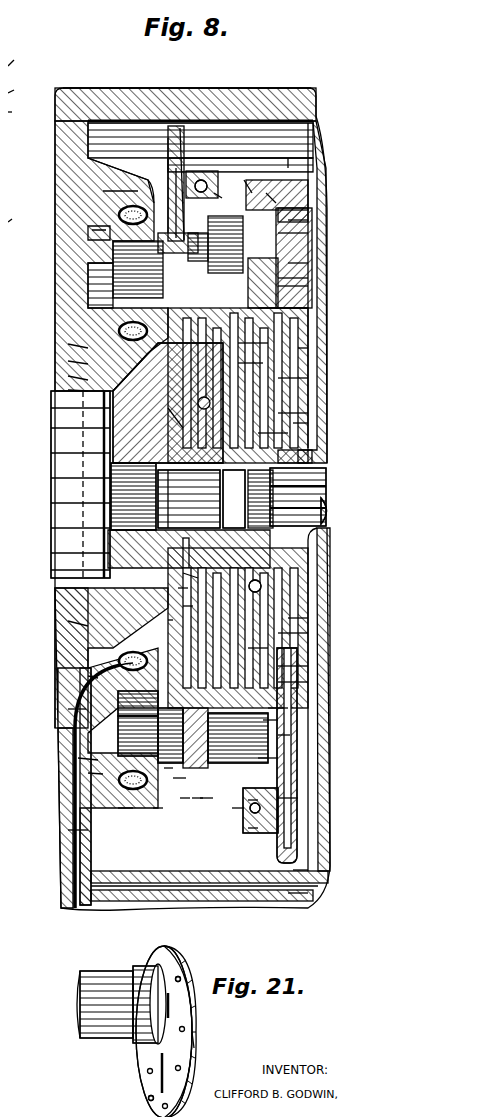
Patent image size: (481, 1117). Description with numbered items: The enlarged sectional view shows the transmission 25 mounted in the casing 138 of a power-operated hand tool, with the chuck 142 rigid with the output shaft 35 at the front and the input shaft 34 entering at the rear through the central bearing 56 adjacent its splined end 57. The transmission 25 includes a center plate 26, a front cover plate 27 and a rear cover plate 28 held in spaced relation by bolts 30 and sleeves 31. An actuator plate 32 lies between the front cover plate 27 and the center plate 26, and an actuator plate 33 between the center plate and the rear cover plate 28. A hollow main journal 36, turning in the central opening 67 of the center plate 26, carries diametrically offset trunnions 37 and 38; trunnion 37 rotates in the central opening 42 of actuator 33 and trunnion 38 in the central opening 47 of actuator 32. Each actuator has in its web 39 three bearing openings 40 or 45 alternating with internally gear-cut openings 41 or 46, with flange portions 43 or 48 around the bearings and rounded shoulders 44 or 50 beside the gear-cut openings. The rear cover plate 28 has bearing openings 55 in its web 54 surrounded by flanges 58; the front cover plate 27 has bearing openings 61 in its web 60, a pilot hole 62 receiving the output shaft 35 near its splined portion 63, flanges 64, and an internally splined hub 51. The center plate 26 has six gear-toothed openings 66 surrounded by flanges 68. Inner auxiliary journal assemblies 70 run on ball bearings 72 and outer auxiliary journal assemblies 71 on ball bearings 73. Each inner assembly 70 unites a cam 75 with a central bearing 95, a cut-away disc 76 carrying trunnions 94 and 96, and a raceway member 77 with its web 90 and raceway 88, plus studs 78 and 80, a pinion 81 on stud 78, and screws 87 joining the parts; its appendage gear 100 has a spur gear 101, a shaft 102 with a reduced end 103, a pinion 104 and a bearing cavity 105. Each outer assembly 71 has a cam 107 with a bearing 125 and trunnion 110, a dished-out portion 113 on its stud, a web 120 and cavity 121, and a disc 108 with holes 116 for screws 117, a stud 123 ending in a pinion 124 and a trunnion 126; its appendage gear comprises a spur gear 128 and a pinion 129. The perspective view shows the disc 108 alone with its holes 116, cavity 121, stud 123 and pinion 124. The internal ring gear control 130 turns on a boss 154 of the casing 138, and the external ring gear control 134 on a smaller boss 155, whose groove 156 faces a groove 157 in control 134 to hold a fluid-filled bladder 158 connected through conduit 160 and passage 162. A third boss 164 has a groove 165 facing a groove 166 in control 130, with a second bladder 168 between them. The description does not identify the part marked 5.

In FIG. 8, the transmission 5 is at (11, 53).
In FIG. 8, the transmission 25 is at (60, 613).
In FIG. 8, the center plate 26 is at (217, 230).
In FIG. 8, the front cover plate 27 is at (176, 790).
In FIG. 8, the rear cover plate 28 is at (4, 84).
In FIG. 8, the bolts or rivets 30 is at (2, 104).
In FIG. 8, the sleeves 31 is at (17, 213).
In FIG. 8, the actuator plate 32 is at (188, 790).
In FIG. 8, the actuator plate 33 is at (260, 335).
In FIG. 8, the input shaft 34 is at (300, 490).
In FIG. 8, the output shaft 35 is at (190, 570).
In FIG. 8, the main journal member 36 is at (270, 425).
In FIG. 8, the trunnion 37 is at (280, 405).
In FIG. 8, the trunnion 38 is at (180, 580).
In FIG. 8, the web portion 39 is at (255, 355).
In FIG. 8, the bearing openings 40 is at (285, 200).
In FIG. 8, the internally gear-cut openings 41 is at (292, 862).
In FIG. 8, the central opening 42 is at (304, 414).
In FIG. 8, the annular flange portion 43 is at (280, 300).
In FIG. 8, the annular shoulder 44 is at (252, 808).
In FIG. 8, the bearing openings 45 is at (198, 790).
In FIG. 8, the internally gear-cut openings 46 is at (170, 405).
In FIG. 8, the central opening 47 is at (185, 598).
In FIG. 8, the annular flange portion 48 is at (210, 190).
In FIG. 8, the annular shoulder 50 is at (175, 420).
In FIG. 8, the internally splined hub 51 is at (96, 452).
In FIG. 8, the web portion 54 is at (290, 370).
In FIG. 8, the bearing openings 55 is at (282, 225).
In FIG. 8, the central bearing opening 56 is at (300, 450).
In FIG. 8, the splined end 57 is at (322, 503).
In FIG. 8, the annular flange portions 58 is at (290, 318).
In FIG. 8, the web portion 60 is at (60, 353).
In FIG. 8, the bearing openings 61 is at (160, 130).
In FIG. 8, the pilot hole 62 is at (175, 515).
In FIG. 8, the splined portion 63 is at (120, 494).
In FIG. 8, the annular flange portions 64 is at (172, 120).
In FIG. 8, the gear-toothed openings 66 is at (275, 270).
In FIG. 8, the central opening 67 is at (234, 499).
In FIG. 8, the annular flanges 68 is at (295, 610).
In FIG. 8, the inner auxiliary journal assembly 70 is at (230, 800).
In FIG. 8, the outer auxiliary journal assembly 71 is at (240, 180).
In FIG. 8, the ball bearings 72 is at (245, 820).
In FIG. 8, the ball bearings 73 is at (193, 172).
In FIG. 8, the cam member 75 is at (150, 800).
In FIG. 8, the cut-away disc member 76 is at (290, 658).
In FIG. 8, the inner raceway member 77 is at (253, 582).
In FIG. 8, the stud 78 is at (125, 722).
In FIG. 8, the stud 80 is at (125, 690).
In FIG. 8, the pinion 81 is at (66, 716).
In FIG. 8, the screws 87 is at (290, 625).
In FIG. 8, the ball bearing raceway 88 is at (245, 792).
In FIG. 8, the web 90 is at (255, 640).
In FIG. 8, the trunnion 94 is at (270, 712).
In FIG. 8, the central cavity or bearing 95 is at (170, 735).
In FIG. 8, the trunnion 96 is at (282, 727).
In FIG. 8, the appendage gear 100 is at (280, 700).
In FIG. 8, the spur gear 101 is at (290, 790).
In FIG. 8, the shaft 102 is at (270, 750).
In FIG. 8, the reduced end portion 103 is at (170, 770).
In FIG. 8, the pinion 104 is at (290, 674).
In FIG. 8, the bearing cavity 105 is at (262, 720).
In FIG. 8, the cam member 107 is at (280, 150).
In FIG. 8, the cut-away disc member 108 is at (60, 368).
In FIG. 21, the cut-away disc member 108 is at (186, 1040).
In FIG. 8, the trunnion 110 is at (290, 278).
In FIG. 8, the dished-out portion 113 is at (290, 255).
In FIG. 21, the holes 116 is at (172, 970).
In FIG. 8, the screws 117 is at (60, 382).
In FIG. 8, the web 120 is at (300, 340).
In FIG. 21, the cavity 121 is at (162, 940).
In FIG. 8, the stud 123 is at (125, 258).
In FIG. 21, the stud 123 is at (130, 1015).
In FIG. 8, the pinion 124 is at (90, 270).
In FIG. 21, the pinion 124 is at (90, 1018).
In FIG. 8, the central cavity or bearing 125 is at (290, 212).
In FIG. 8, the trunnion 126 is at (82, 224).
In FIG. 8, the spur gear 128 is at (168, 160).
In FIG. 8, the pinion 129 is at (262, 190).
In FIG. 8, the control with internal ring gear 130 is at (85, 765).
In FIG. 8, the control member with external ring gear 134 is at (75, 701).
In FIG. 8, the casing 138 is at (290, 80).
In FIG. 8, the chuck 142 is at (48, 462).
In FIG. 8, the circular boss 154 is at (80, 750).
In FIG. 8, the boss 155 is at (110, 652).
In FIG. 8, the annular groove 156 is at (60, 336).
In FIG. 8, the complementary groove 157 is at (112, 323).
In FIG. 8, the bladder 158 is at (85, 668).
In FIG. 8, the conduit 160 is at (75, 822).
In FIG. 8, the passage 162 is at (290, 885).
In FIG. 8, the third concentric boss 164 is at (130, 183).
In FIG. 8, the annular groove 165 is at (118, 800).
In FIG. 8, the complementary groove 166 is at (110, 775).
In FIG. 8, the bladder 168 is at (112, 207).